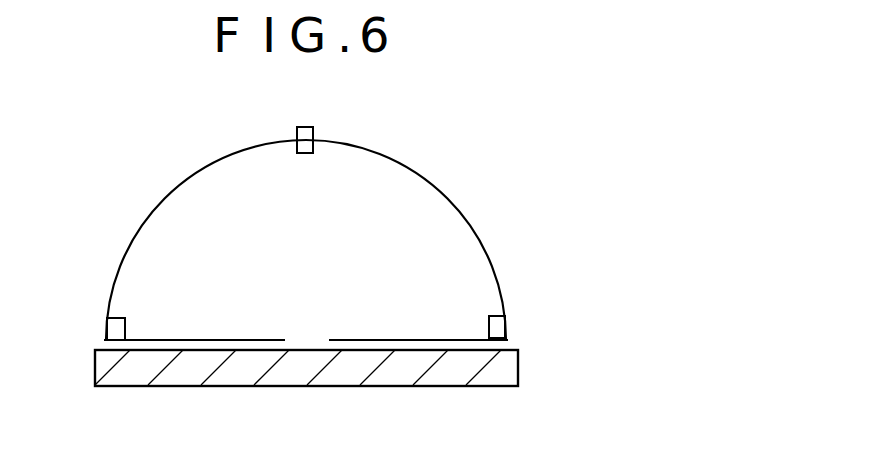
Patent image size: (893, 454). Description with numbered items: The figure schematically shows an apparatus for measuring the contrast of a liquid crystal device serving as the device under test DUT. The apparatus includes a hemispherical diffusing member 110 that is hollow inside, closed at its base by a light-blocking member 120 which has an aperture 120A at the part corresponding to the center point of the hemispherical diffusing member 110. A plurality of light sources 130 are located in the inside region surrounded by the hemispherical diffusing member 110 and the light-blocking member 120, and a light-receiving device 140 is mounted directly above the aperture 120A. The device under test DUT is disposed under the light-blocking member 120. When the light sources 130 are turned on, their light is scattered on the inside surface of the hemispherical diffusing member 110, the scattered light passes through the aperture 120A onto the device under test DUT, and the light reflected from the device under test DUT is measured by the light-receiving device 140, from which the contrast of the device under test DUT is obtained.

The hemispherical diffusing member 110 is at (477, 227).
The light-blocking member 120 is at (404, 326).
The aperture 120A is at (315, 333).
The light sources 130 is at (107, 326).
The light-receiving device 140 is at (313, 132).
The device under test DUT is at (518, 363).